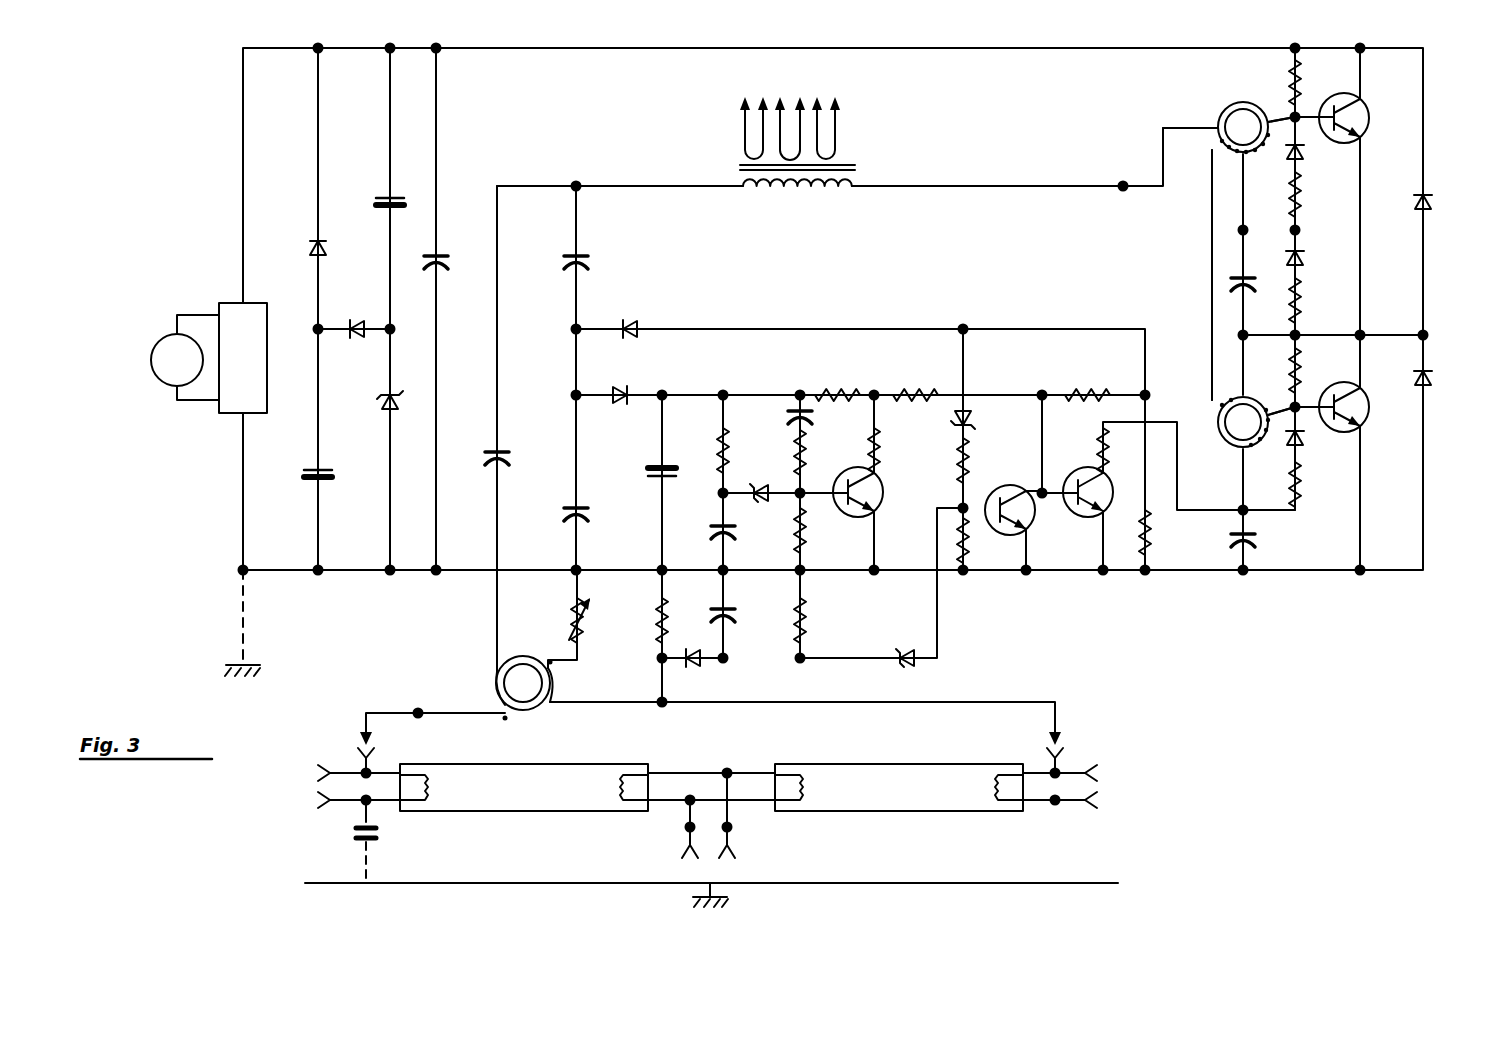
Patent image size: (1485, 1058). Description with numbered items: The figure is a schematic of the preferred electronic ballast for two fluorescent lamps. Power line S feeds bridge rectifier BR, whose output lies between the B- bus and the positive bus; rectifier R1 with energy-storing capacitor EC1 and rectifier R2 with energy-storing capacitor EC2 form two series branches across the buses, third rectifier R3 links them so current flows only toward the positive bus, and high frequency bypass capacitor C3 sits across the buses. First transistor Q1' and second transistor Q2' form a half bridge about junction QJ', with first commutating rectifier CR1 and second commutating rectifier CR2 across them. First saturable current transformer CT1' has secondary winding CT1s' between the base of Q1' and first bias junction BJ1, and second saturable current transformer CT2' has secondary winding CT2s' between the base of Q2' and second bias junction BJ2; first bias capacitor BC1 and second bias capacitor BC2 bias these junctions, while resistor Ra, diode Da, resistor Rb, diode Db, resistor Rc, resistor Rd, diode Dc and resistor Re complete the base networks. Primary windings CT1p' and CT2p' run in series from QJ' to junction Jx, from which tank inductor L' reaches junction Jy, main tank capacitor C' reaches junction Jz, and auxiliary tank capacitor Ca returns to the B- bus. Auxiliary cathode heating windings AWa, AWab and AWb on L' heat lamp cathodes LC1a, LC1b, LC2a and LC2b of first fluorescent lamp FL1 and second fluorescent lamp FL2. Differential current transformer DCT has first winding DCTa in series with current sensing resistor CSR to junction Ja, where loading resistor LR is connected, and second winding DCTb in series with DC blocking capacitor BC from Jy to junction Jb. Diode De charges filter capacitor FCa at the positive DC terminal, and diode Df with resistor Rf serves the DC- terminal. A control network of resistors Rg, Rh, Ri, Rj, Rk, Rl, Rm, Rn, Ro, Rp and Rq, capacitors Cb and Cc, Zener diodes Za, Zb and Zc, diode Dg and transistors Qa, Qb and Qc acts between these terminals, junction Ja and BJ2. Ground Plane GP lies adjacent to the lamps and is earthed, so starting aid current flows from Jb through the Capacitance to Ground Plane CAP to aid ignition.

The power line S is at (185, 371).
The bridge rectifier BR is at (262, 371).
The B− bus B- is at (357, 574).
The rectifier R1 is at (312, 243).
The rectifier R2 is at (385, 405).
The third rectifier R3 is at (352, 325).
The energy-storing capacitor EC1 is at (305, 474).
The energy-storing capacitor EC2 is at (375, 203).
The high frequency bypass capacitor C3 is at (445, 258).
The DC blocking capacitor BC is at (490, 455).
The main tank capacitor C' is at (557, 242).
The junction Jy is at (582, 190).
The junction Jz is at (572, 333).
The junction Jx is at (1122, 182).
The tank inductor L' is at (780, 202).
The auxiliary cathode heating winding AWb is at (752, 100).
The auxiliary cathode heating winding AWab is at (790, 102).
The auxiliary cathode heating winding AWa is at (825, 100).
The diode Df is at (632, 323).
The diode De is at (620, 402).
The DC− terminal DC- is at (960, 325).
The resistor Rn is at (718, 450).
The filter capacitor FCa is at (658, 480).
The auxiliary tank capacitor Ca is at (570, 508).
The capacitor Cb is at (792, 414).
The resistor Rp is at (795, 455).
The Zener diode Zc is at (760, 502).
The resistor Ro is at (806, 538).
The resistor Rm is at (826, 392).
The junction Ja is at (873, 392).
The resistor Rk is at (918, 392).
The resistor Rh is at (1082, 392).
The resistor Rl is at (868, 450).
The NPN transistor Qc is at (884, 492).
The Zener diode Zb is at (972, 416).
The resistor Ri is at (958, 462).
The resistor Rj is at (968, 550).
The PNP transistor Qb is at (1016, 488).
The PNP transistor Qa is at (1078, 510).
The resistor Rg is at (1097, 452).
The resistor Rf is at (1150, 540).
The loading resistor LR is at (655, 620).
The current sensing resistor CSR is at (585, 628).
The capacitor Cc is at (735, 615).
The diode Dg is at (695, 668).
The resistor Rq is at (808, 620).
The Zener diode Za is at (905, 650).
The differential current transformer DCT is at (520, 652).
The first winding DCTa is at (555, 695).
The second winding DCTb is at (495, 685).
The junction Jb is at (415, 710).
The first fluorescent lamp FL1 is at (925, 812).
The second fluorescent lamp FL2 is at (540, 812).
The lamp cathode LC1a is at (993, 792).
The lamp cathode LC1b is at (805, 792).
The lamp cathode LC2a is at (618, 792).
The lamp cathode LC2b is at (430, 792).
The Capacitance to Ground Plane CAP is at (345, 835).
The Ground Plane GP is at (1090, 878).
The first saturable current transformer CT1' is at (1184, 122).
The secondary winding CT1s' is at (1254, 93).
The primary winding CT1p' is at (1181, 177).
The second saturable current transformer CT2' is at (1211, 395).
The secondary winding CT2s' is at (1239, 452).
The primary winding CT2p' is at (1189, 275).
The resistor Ra is at (1302, 98).
The resistor Rb is at (1302, 208).
The resistor Rc is at (1302, 306).
The resistor Rd is at (1302, 368).
The resistor Re is at (1302, 490).
The diode Da is at (1303, 155).
The diode Db is at (1303, 260).
The diode Dc is at (1303, 444).
The first transistor Q1' is at (1368, 105).
The second transistor Q2' is at (1368, 419).
The junction QJ' is at (1383, 307).
The first commutating rectifier CR1 is at (1418, 208).
The second commutating rectifier CR2 is at (1418, 380).
The first bias junction BJ1 is at (1238, 234).
The second bias junction BJ2 is at (1248, 513).
The first bias capacitor BC1 is at (1233, 282).
The second bias capacitor BC2 is at (1252, 542).